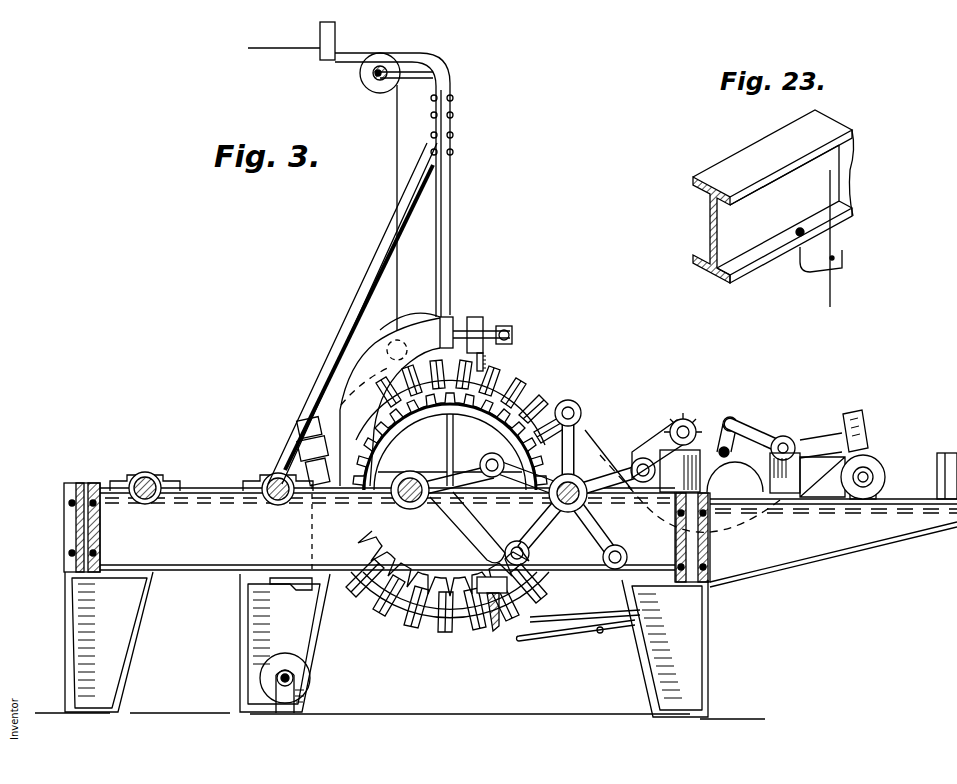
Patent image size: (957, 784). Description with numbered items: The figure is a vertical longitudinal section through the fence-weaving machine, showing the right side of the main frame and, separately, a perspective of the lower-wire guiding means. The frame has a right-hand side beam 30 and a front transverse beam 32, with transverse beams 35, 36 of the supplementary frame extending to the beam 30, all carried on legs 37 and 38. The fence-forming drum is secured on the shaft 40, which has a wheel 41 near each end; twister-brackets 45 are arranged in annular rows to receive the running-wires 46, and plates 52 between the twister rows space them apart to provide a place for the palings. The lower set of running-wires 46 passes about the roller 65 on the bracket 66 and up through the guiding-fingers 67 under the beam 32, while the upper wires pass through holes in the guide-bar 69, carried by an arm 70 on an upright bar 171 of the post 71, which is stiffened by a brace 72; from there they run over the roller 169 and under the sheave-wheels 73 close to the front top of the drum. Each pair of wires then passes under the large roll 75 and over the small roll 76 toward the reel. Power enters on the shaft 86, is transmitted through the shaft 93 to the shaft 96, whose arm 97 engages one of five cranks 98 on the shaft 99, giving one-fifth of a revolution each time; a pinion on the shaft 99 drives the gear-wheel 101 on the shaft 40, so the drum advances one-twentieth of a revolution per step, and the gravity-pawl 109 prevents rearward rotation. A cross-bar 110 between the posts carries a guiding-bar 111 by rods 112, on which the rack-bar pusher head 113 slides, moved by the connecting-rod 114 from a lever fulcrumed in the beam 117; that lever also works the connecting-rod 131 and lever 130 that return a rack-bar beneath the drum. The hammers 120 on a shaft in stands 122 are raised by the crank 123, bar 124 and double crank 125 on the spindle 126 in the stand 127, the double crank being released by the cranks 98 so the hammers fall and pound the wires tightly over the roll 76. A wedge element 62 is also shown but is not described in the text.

In FIG. 3, the right-hand side beam 30 is at (528, 537).
In FIG. 23, the front transverse beam 32 is at (750, 163).
In FIG. 3, the transverse beam 35 is at (692, 550).
In FIG. 3, the transverse beam 36 is at (76, 526).
In FIG. 3, the leg 37 is at (386, 644).
In FIG. 3, the leg 38 is at (285, 643).
In FIG. 3, the drum shaft 40 is at (435, 460).
In FIG. 3, the wheel 41 is at (450, 438).
In FIG. 3, the twister-bracket 45 is at (572, 400).
In FIG. 3, the running-wire 46 is at (158, 704).
In FIG. 23, the running-wire 46 is at (832, 300).
In FIG. 3, the plate 52 is at (434, 625).
In FIG. 3, the block 62 is at (507, 590).
In FIG. 3, the roller 65 is at (306, 676).
In FIG. 3, the bracket 66 is at (300, 690).
In FIG. 3, the guiding-finger 67 is at (292, 578).
In FIG. 23, the guiding-finger 67 is at (815, 272).
In FIG. 3, the guide-bar 69 is at (320, 58).
In FIG. 3, the arm 70 is at (416, 53).
In FIG. 3, the post 71 is at (356, 372).
In FIG. 3, the brace 72 is at (360, 306).
In FIG. 3, the sheave-wheel 73 is at (397, 338).
In FIG. 3, the large roll 75 is at (690, 493).
In FIG. 3, the small roll 76 is at (872, 458).
In FIG. 3, the shaft 86 is at (145, 478).
In FIG. 3, the shaft 93 is at (268, 476).
In FIG. 3, the shaft 96 is at (402, 508).
In FIG. 3, the arm 97 is at (467, 527).
In FIG. 3, the crank 98 is at (612, 468).
In FIG. 3, the shaft 99 is at (570, 512).
In FIG. 3, the gear-wheel 101 is at (500, 392).
In FIG. 3, the gravity-pawl 109 is at (380, 400).
In FIG. 3, the cross-bar 110 is at (450, 317).
In FIG. 3, the guiding-bar 111 is at (488, 331).
In FIG. 3, the bolt or rod 112 is at (468, 317).
In FIG. 3, the rack-bar pusher head 113 is at (486, 362).
In FIG. 3, the connecting-rod 114 is at (512, 334).
In FIG. 3, the beam 117 is at (492, 630).
In FIG. 3, the hammer 120 is at (868, 412).
In FIG. 3, the stand 122 is at (807, 475).
In FIG. 3, the crank 123 is at (762, 432).
In FIG. 3, the bar 124 is at (722, 418).
In FIG. 3, the double crank 125 is at (662, 440).
In FIG. 3, the spindle 126 is at (684, 419).
In FIG. 3, the stand 127 is at (665, 471).
In FIG. 3, the lever 130 is at (584, 615).
In FIG. 3, the connecting-rod 131 is at (560, 638).
In FIG. 3, the roller 169 is at (372, 90).
In FIG. 3, the upright bar 171 is at (450, 222).